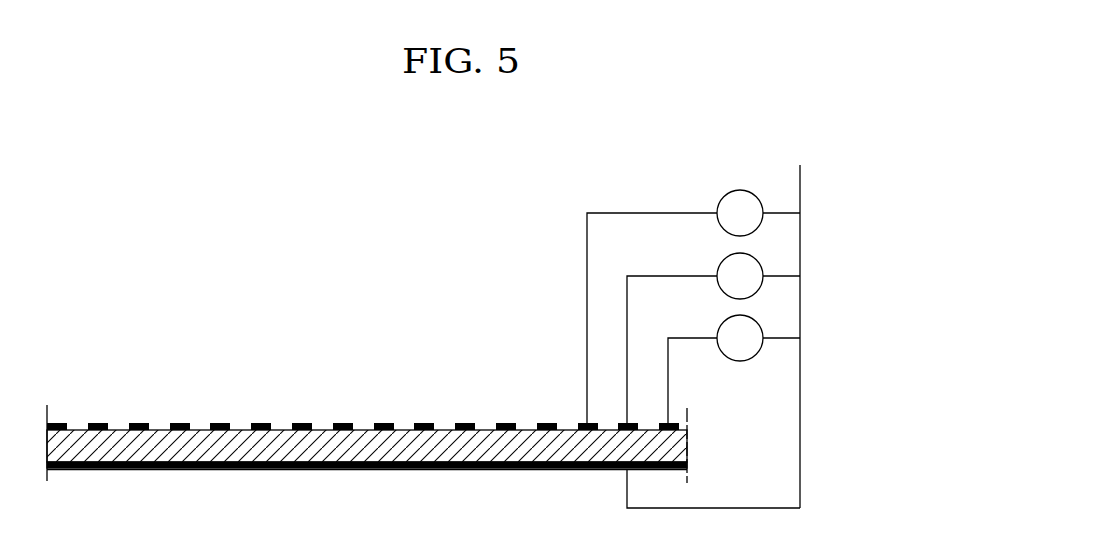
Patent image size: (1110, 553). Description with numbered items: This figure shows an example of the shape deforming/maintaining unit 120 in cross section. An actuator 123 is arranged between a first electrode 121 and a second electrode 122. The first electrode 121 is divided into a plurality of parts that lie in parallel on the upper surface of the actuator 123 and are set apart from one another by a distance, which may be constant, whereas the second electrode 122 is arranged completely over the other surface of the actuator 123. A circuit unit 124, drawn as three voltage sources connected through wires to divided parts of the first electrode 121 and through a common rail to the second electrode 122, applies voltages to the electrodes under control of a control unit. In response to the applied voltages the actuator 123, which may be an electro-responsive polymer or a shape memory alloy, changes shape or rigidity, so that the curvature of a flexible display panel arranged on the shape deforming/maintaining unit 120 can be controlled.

The shape deforming/maintaining unit 120 is at (367, 391).
The first electrode 121 is at (58, 423).
The second electrode 122 is at (298, 464).
The actuator 123 is at (213, 450).
The circuit unit 124 is at (800, 313).